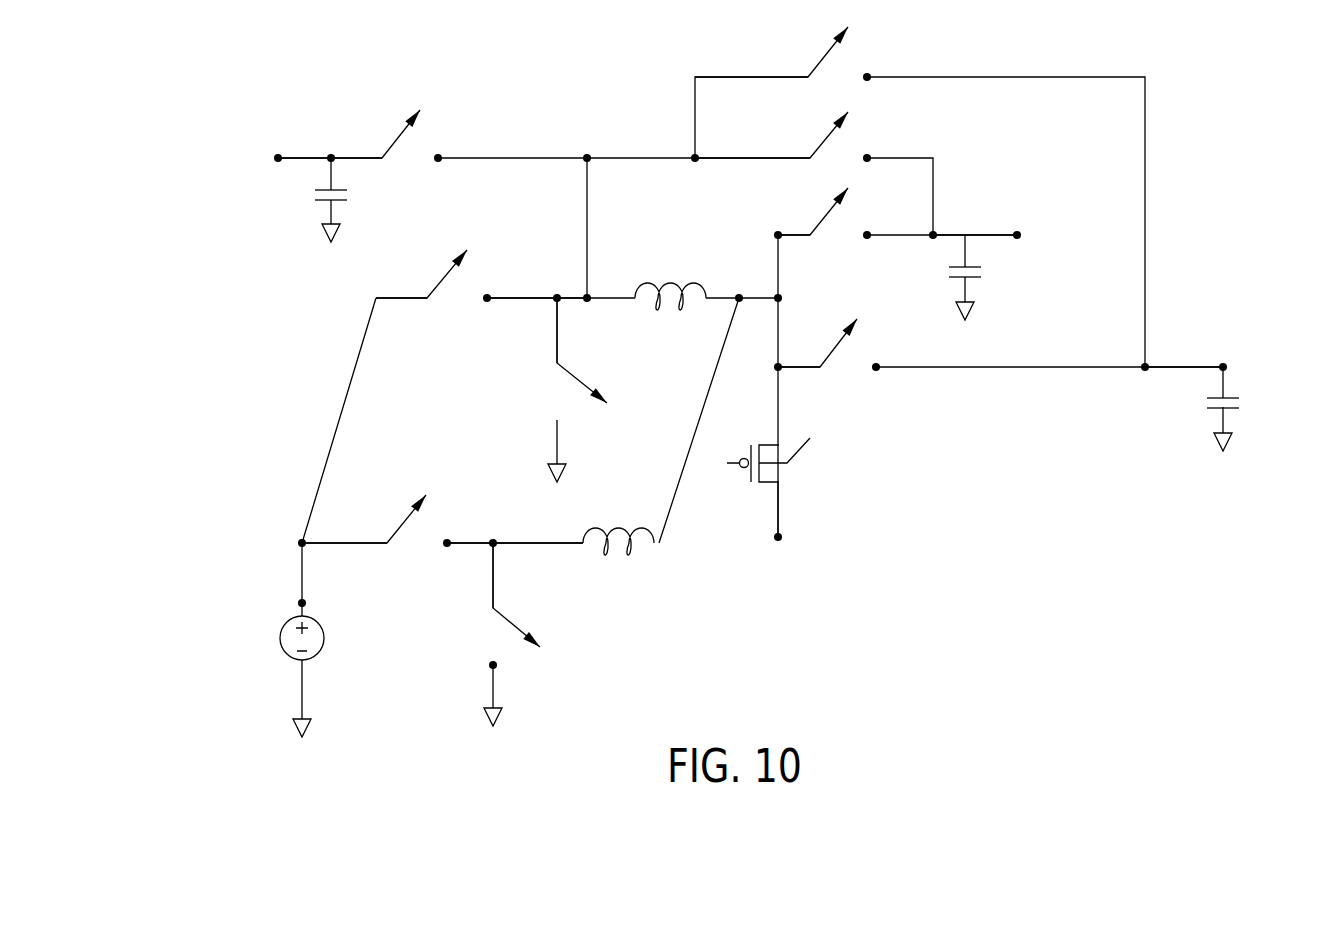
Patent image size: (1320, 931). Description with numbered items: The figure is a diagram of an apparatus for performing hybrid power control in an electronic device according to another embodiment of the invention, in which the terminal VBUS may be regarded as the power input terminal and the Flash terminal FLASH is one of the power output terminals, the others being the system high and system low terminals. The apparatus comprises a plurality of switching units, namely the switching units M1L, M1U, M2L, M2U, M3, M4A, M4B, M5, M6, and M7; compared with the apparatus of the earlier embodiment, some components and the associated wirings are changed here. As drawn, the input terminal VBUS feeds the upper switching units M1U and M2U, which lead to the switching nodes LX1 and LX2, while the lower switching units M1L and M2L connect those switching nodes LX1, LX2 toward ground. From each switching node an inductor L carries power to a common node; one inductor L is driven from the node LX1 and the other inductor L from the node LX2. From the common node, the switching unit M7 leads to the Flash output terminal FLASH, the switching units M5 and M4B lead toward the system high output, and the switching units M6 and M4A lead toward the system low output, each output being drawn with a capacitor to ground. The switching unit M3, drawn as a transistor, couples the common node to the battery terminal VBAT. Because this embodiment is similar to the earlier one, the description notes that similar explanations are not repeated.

The switching unit M7 is at (378, 148).
The switching unit M6 is at (794, 50).
The switching unit M5 is at (794, 133).
The switching unit M4B is at (843, 210).
The switching unit M4A is at (826, 360).
The switching unit M3 is at (771, 464).
The switching unit M1U is at (427, 286).
The switching unit M1L is at (558, 352).
The switching unit M2U is at (371, 534).
The switching unit M2L is at (494, 598).
The inductor L is at (644, 405).
The switching node LX1 is at (537, 279).
The switching node LX2 is at (515, 530).
The terminal Flash FLASH is at (260, 160).
The terminal VBAT is at (775, 527).
The terminal VBUS is at (264, 620).